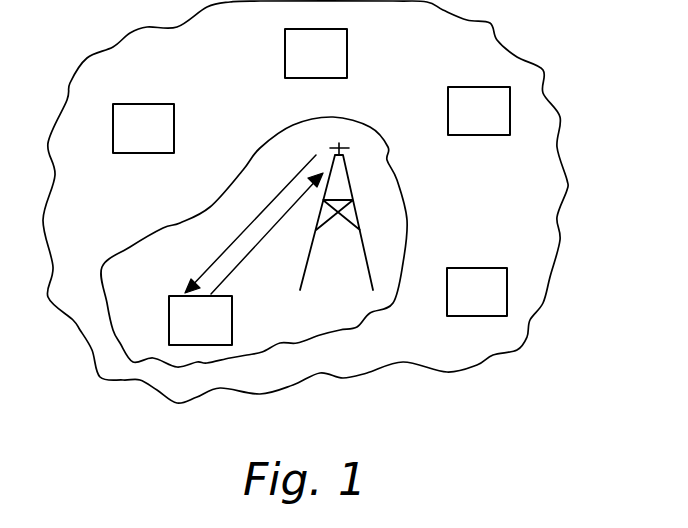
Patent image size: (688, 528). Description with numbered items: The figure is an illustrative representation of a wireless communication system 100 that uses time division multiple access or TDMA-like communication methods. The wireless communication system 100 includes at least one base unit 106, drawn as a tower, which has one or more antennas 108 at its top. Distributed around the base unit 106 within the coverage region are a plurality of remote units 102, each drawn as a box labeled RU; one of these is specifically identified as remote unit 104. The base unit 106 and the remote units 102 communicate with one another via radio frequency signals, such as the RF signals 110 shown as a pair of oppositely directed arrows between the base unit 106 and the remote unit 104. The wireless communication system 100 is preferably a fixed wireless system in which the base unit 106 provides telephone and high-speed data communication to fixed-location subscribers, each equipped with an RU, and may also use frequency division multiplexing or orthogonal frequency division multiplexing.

The wireless communication system 100 is at (472, 421).
The remote units 102 is at (157, 72).
The remote unit 104 is at (168, 320).
The base unit 106 is at (350, 183).
The antennas 108 is at (341, 146).
The RF signals 110 is at (186, 231).